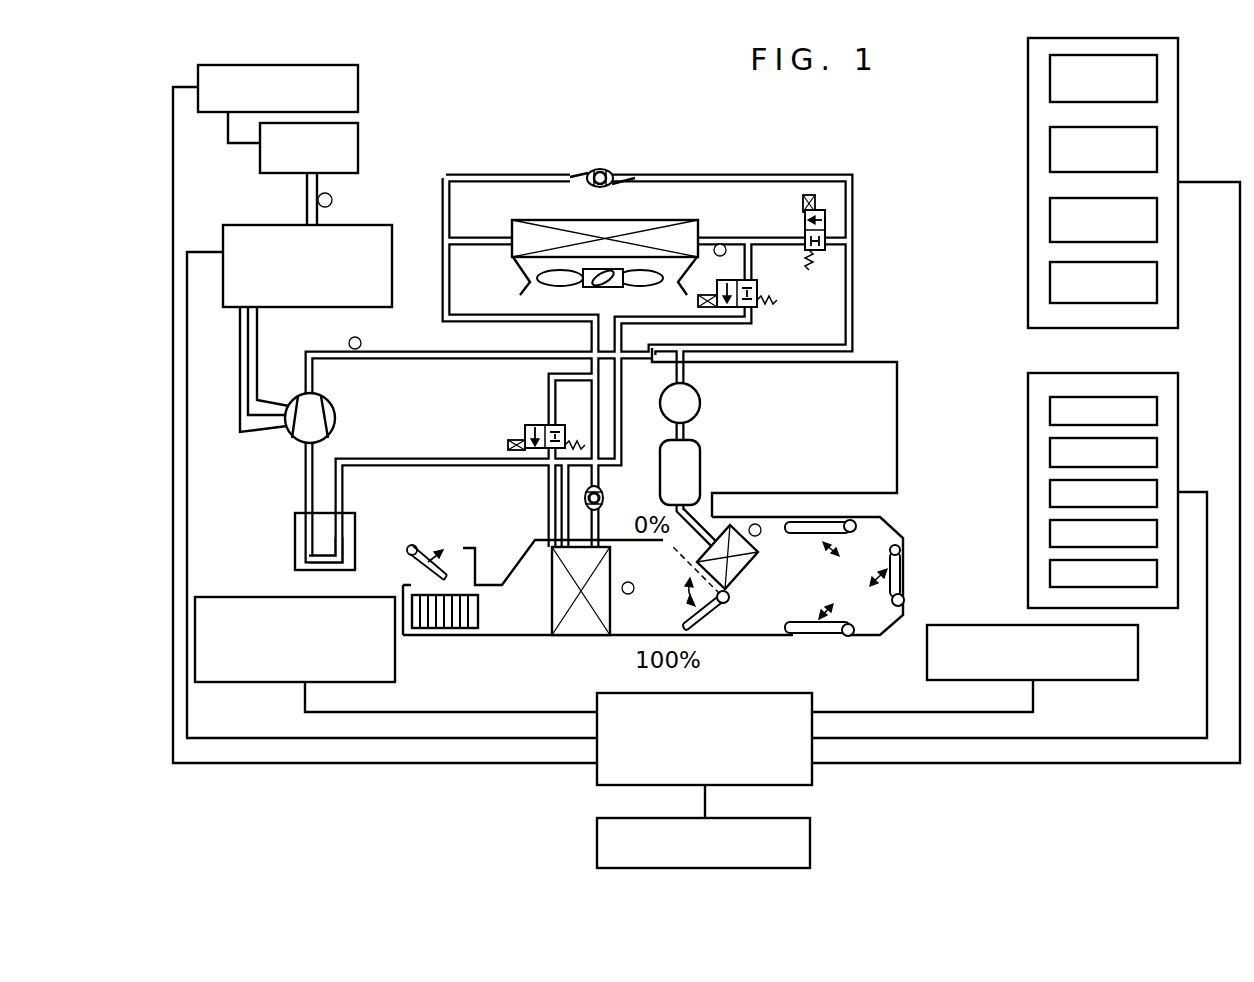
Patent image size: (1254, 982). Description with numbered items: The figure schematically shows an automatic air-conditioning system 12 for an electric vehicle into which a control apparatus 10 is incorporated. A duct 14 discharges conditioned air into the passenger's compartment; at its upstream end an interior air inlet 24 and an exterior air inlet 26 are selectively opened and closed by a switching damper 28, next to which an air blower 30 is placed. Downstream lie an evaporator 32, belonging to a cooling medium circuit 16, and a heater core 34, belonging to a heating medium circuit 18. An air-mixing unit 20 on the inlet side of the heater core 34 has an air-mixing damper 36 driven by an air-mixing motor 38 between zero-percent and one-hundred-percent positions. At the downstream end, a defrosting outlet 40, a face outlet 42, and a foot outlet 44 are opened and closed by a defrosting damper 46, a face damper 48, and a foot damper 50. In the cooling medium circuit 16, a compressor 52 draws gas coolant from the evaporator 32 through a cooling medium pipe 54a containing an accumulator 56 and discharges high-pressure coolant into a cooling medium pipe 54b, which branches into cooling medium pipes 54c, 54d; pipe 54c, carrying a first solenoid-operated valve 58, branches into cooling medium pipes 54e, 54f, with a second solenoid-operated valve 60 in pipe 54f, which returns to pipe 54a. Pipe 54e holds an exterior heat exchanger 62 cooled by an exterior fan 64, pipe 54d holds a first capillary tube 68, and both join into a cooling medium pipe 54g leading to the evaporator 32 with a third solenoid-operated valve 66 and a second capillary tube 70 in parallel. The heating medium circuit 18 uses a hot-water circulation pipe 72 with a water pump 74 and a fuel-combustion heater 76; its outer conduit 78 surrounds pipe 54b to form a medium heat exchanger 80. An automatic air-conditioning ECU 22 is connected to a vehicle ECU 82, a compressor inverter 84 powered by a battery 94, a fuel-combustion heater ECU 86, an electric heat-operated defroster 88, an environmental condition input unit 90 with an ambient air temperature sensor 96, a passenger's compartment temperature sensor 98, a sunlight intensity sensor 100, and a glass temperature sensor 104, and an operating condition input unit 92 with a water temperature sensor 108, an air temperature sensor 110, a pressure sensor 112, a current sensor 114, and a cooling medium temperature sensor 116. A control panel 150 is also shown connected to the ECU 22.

The control apparatus 10 is at (825, 153).
The automatic air-conditioning system 12 is at (921, 94).
The duct 14 is at (543, 643).
The cooling medium circuit 16 is at (292, 450).
The heating medium circuit 18 is at (905, 416).
The air-mixing unit 20 is at (719, 615).
The automatic air-conditioning ECU 22 is at (812, 780).
The interior air inlet 24 is at (455, 548).
The exterior air inlet 26 is at (418, 580).
The switching damper 28 is at (431, 543).
The air blower 30 is at (440, 628).
The evaporator 32 is at (580, 635).
The heater core 34 is at (738, 572).
The air-mixing damper 36 is at (692, 612).
The air-mixing motor 38 is at (729, 599).
The defrosting outlet 40 is at (825, 517).
The face outlet 42 is at (903, 577).
The foot outlet 44 is at (812, 636).
The defrosting damper 46 is at (803, 537).
The face damper 48 is at (900, 548).
The foot damper 50 is at (838, 622).
The compressor 52 is at (335, 412).
The cooling medium pipe 54a is at (458, 458).
The cooling medium pipe 54b is at (375, 352).
The cooling medium pipe 54c is at (770, 240).
The cooling medium pipe 54d is at (738, 175).
The cooling medium pipe 54e is at (712, 235).
The cooling medium pipe 54f is at (710, 320).
The cooling medium pipe 54g is at (446, 284).
The accumulator 56 is at (295, 556).
The first solenoid-operated valve 58 is at (825, 215).
The second solenoid-operated valve 60 is at (777, 298).
The exterior heat exchanger 62 is at (618, 218).
The exterior fan 64 is at (620, 287).
The third solenoid-operated valve 66 is at (528, 424).
The first capillary tube 68 is at (598, 173).
The second capillary tube 70 is at (604, 499).
The hot-water circulation pipe 72 is at (898, 443).
The water pump 74 is at (701, 405).
The fuel-combustion heater 76 is at (701, 456).
The outer conduit 78 is at (810, 363).
The medium heat exchanger 80 is at (826, 341).
The vehicle ECU 82 is at (358, 80).
The compressor inverter 84 is at (243, 225).
The fuel-combustion heater ECU 86 is at (262, 682).
The electric heat-operated defroster 88 is at (1102, 680).
The environmental condition input unit 90 is at (1134, 181).
The operating condition input unit 92 is at (931, 476).
The battery 94 is at (358, 138).
The ambient air temperature sensor 96 is at (1157, 82).
The passenger's compartment temperature sensor 98 is at (1157, 148).
The sunlight intensity sensor 100 is at (1157, 222).
The glass temperature sensor 104 is at (1157, 285).
The water temperature sensor 108 is at (1157, 411).
The air temperature sensor 110 is at (1157, 452).
The pressure sensor 112 is at (349, 340).
The current sensor 114 is at (333, 201).
The cooling medium temperature sensor 116 is at (727, 252).
The control panel 150 is at (818, 840).